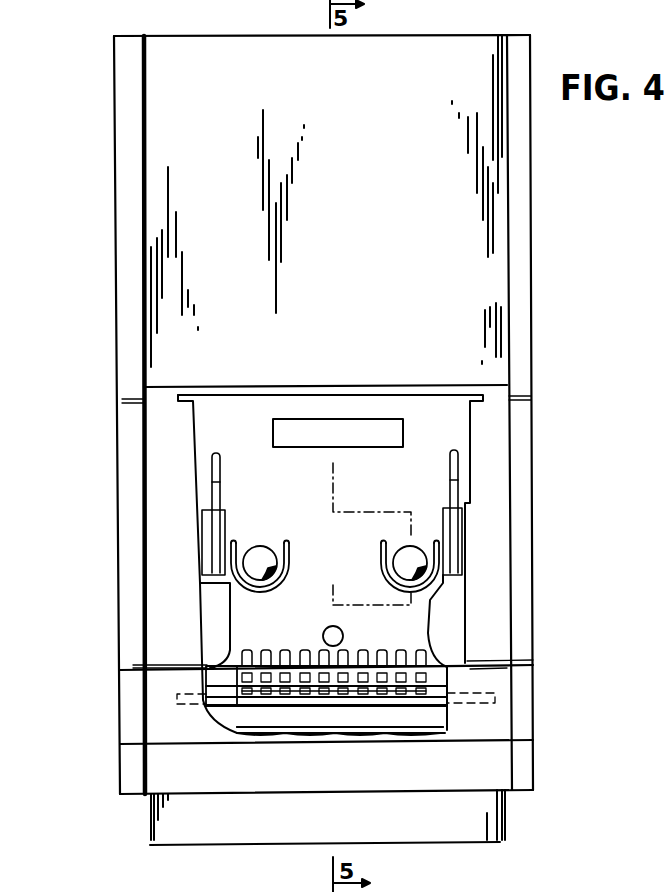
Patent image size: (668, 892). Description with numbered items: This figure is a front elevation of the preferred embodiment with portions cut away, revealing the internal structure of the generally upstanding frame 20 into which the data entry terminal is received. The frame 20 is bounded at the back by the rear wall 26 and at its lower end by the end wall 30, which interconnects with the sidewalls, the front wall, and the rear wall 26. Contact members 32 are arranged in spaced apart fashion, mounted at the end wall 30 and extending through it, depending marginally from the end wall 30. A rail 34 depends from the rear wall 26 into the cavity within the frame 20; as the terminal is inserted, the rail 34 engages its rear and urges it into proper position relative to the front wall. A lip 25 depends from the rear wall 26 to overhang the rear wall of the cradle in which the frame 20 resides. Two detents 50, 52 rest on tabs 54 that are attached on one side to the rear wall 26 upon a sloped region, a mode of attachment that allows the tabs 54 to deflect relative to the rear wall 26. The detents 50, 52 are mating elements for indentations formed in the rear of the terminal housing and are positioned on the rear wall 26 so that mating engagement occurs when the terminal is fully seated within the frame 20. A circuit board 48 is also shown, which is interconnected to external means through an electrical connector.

The frame 20 is at (502, 422).
The lip 25 is at (352, 427).
The rear wall 26 is at (440, 465).
The end wall 30 is at (220, 672).
The contact members 32 is at (247, 650).
The rail 34 is at (468, 493).
The circuit board 48 is at (390, 705).
The detent 50 is at (262, 555).
The detent 52 is at (412, 560).
The tabs 54 is at (384, 546).